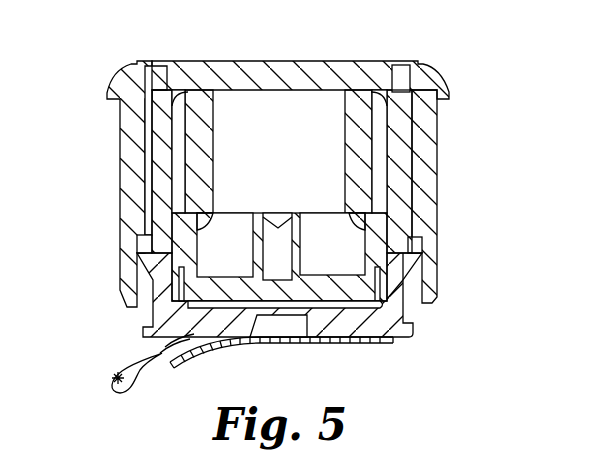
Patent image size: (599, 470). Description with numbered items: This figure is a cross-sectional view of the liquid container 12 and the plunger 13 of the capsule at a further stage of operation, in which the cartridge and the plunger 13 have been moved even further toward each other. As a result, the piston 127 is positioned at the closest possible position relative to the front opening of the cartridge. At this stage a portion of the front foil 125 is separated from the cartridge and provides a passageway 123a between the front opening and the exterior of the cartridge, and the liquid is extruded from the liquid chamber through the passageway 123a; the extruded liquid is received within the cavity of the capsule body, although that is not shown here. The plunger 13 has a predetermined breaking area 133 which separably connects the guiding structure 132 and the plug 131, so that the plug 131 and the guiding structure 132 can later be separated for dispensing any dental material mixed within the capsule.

The liquid container 12 is at (397, 295).
The plunger 13 is at (277, 153).
The passageway 123a is at (163, 348).
The front foil 125 is at (350, 344).
The piston 127 is at (373, 244).
The plug 131 is at (365, 183).
The guiding structure 132 is at (133, 183).
The predetermined breaking area 133 is at (393, 63).